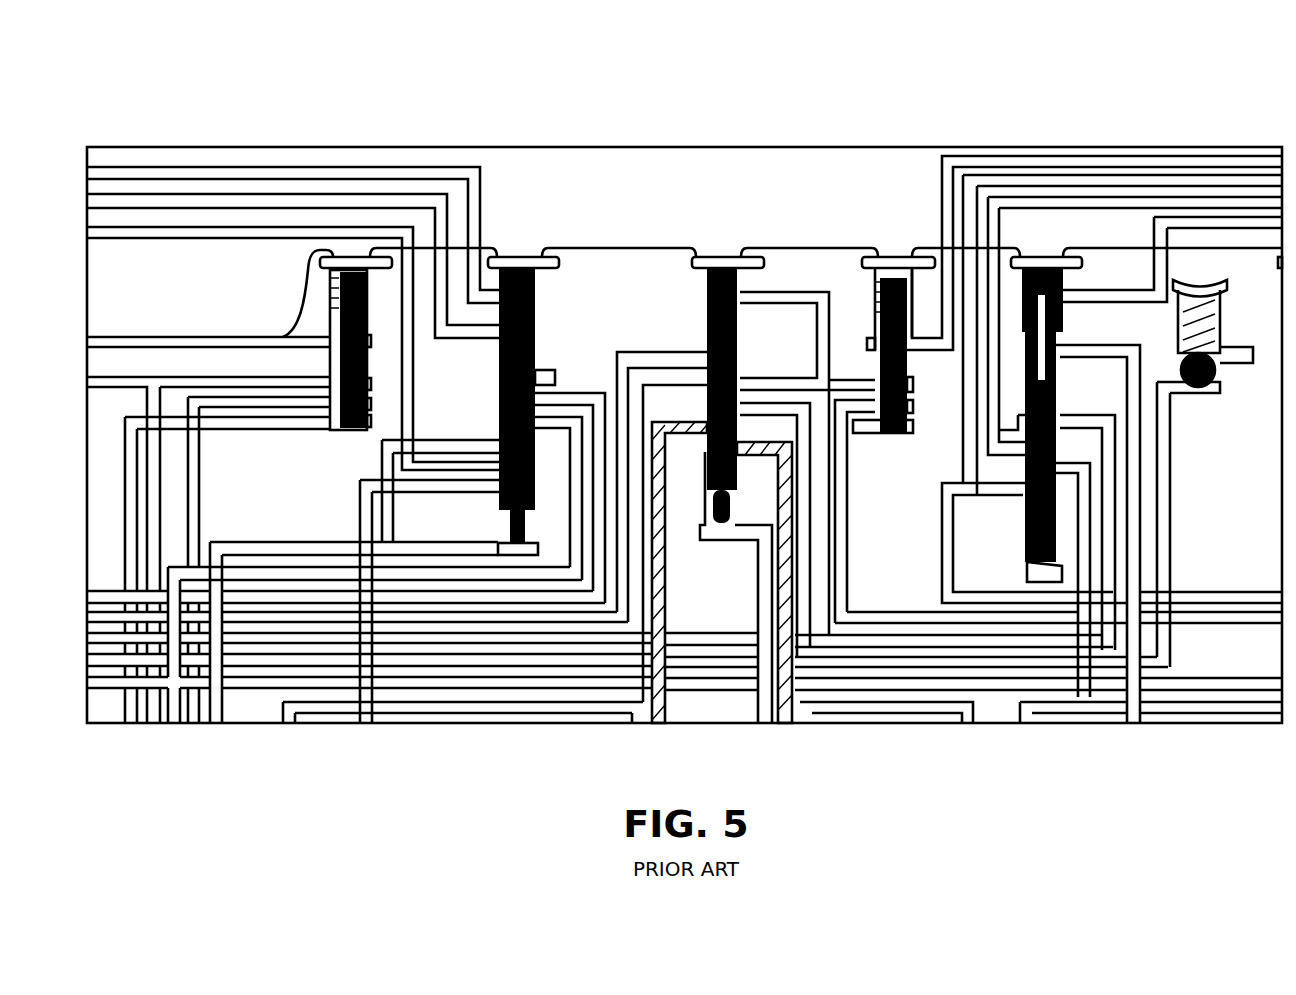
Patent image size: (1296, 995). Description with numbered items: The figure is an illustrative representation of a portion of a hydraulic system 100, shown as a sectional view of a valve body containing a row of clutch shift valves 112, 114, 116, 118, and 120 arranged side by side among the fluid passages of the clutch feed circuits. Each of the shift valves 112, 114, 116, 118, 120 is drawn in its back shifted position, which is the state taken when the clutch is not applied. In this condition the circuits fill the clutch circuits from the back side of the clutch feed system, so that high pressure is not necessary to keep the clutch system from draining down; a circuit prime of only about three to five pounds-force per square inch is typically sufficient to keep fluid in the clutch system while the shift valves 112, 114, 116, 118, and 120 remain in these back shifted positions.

The hydraulic system portion 100 is at (637, 80).
The shift valve 112 is at (345, 266).
The shift valve 114 is at (513, 266).
The shift valve 116 is at (723, 266).
The shift valve 118 is at (884, 272).
The shift valve 120 is at (1040, 266).